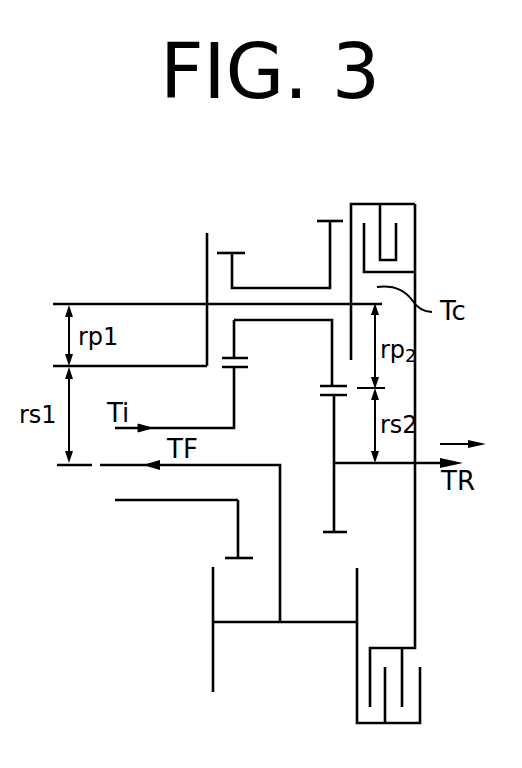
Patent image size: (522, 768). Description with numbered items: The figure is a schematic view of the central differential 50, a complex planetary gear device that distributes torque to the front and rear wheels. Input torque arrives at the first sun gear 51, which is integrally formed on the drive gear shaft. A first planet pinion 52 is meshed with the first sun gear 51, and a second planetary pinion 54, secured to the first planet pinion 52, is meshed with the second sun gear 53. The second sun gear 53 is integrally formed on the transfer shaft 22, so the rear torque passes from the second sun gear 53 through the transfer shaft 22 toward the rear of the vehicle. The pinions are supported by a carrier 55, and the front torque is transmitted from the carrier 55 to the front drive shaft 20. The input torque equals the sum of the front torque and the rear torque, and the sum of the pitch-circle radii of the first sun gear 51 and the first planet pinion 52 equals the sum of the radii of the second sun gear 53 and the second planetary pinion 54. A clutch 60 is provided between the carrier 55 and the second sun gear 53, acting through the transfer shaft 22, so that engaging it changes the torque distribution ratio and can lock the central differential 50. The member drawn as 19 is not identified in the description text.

The central differential 50 is at (273, 190).
The first planet pinion 52 is at (235, 242).
The second planetary pinion 54 is at (334, 219).
The second sun gear 53 is at (334, 427).
The clutch 60 is at (415, 228).
The transfer shaft 22 is at (418, 470).
The front drive shaft 20 is at (118, 468).
The shaft 19 is at (158, 502).
The first sun gear 51 is at (235, 540).
The carrier 55 is at (250, 623).